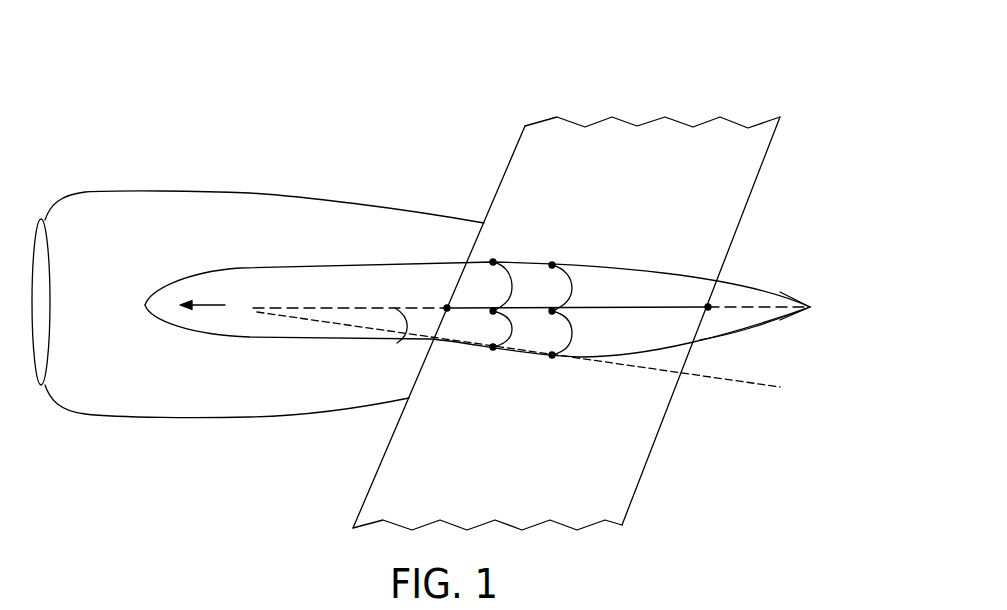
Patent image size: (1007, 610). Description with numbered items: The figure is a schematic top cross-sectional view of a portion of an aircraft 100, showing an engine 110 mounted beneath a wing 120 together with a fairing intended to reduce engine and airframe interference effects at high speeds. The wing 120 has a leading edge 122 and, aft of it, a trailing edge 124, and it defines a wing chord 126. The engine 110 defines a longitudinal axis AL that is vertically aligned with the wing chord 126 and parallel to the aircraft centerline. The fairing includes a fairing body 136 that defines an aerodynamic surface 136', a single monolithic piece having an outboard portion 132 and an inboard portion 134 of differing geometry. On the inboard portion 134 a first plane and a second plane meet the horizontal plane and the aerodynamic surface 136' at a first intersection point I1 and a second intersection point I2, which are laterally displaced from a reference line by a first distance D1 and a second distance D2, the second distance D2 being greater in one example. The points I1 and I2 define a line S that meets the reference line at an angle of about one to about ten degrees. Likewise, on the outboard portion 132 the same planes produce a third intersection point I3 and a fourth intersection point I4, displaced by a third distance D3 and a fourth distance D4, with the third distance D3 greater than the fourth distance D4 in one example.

The aircraft 100 is at (466, 265).
The engine 110 is at (258, 358).
The wing 120 is at (600, 277).
The leading edge 122 is at (510, 155).
The trailing edge 124 is at (777, 147).
The wing chord 126 is at (600, 310).
The outboard portion 132 is at (685, 268).
The inboard portion 134 is at (627, 358).
The fairing body 136 is at (831, 270).
The aerodynamic surface 136' is at (754, 331).
The first intersection point I1 is at (493, 347).
The second intersection point I2 is at (552, 355).
The third intersection point I3 is at (493, 262).
The fourth intersection point I4 is at (552, 265).
The first distance D1 is at (512, 329).
The second distance D2 is at (572, 333).
The third distance D3 is at (512, 287).
The fourth distance D4 is at (572, 288).
The line S is at (513, 363).
The longitudinal axis AL is at (822, 307).